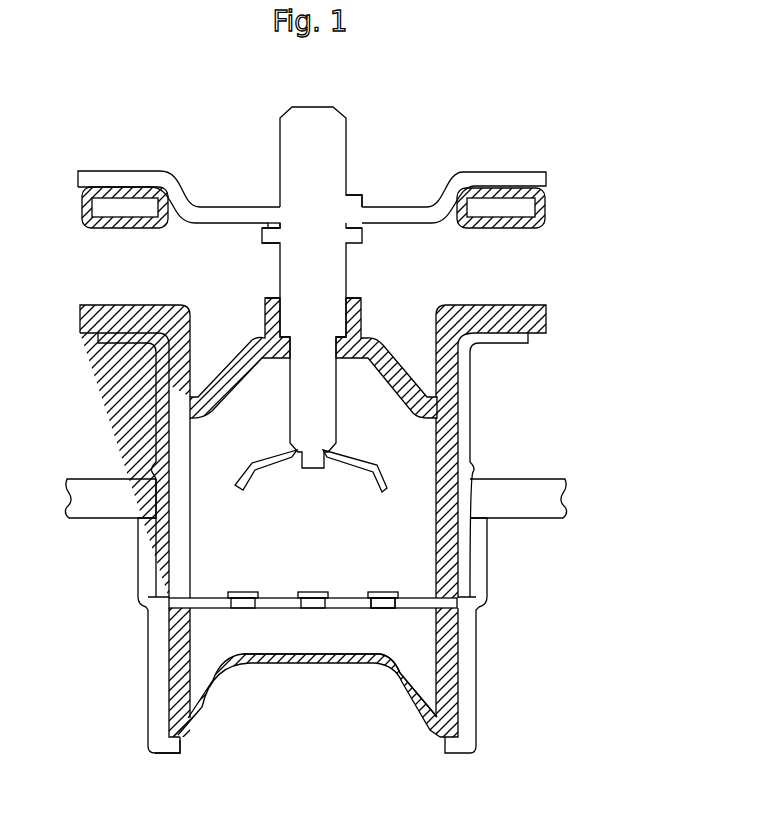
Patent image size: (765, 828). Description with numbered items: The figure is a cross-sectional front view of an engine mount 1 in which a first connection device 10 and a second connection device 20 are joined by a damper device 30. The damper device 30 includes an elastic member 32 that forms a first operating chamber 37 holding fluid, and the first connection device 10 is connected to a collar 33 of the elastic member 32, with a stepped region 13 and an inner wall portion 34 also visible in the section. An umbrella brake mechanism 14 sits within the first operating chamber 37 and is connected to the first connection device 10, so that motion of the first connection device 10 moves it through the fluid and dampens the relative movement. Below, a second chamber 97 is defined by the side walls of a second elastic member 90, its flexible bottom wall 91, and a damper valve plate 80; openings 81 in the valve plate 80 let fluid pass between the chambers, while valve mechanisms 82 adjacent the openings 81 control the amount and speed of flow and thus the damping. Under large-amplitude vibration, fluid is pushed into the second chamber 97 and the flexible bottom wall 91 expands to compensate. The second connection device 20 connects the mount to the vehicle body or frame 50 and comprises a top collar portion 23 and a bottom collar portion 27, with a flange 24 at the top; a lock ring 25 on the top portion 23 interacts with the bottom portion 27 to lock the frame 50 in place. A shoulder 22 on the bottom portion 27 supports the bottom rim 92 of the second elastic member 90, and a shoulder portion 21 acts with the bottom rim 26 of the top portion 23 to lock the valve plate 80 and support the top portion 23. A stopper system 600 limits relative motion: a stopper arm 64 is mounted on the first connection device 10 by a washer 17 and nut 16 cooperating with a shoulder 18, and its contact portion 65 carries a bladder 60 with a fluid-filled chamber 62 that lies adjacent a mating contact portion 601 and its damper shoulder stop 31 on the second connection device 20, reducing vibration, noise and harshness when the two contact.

The engine mount 1 is at (108, 108).
The first connection device 10 is at (321, 299).
The stem shoulder 13 is at (343, 335).
The umbrella brake mechanism 14 is at (385, 473).
The nut 16 is at (267, 235).
The washer 17 is at (271, 221).
The shoulder 18 is at (357, 190).
The second connection device 20 is at (297, 543).
The shoulder portion 21 is at (142, 608).
The shoulder 22 is at (172, 750).
The top collar portion 23 is at (158, 387).
The housing flange 24 is at (117, 343).
The lock ring 25 is at (153, 473).
The bottom rim 26 is at (160, 578).
The bottom collar portion 27 is at (470, 702).
The damper device 30 is at (374, 507).
The damper shoulder stop 31 is at (505, 305).
The elastic member 32 is at (383, 345).
The collar 33 is at (353, 310).
The inner body wall 34 is at (438, 577).
The first operating chamber 37 is at (378, 527).
The vehicle body or frame 50 is at (548, 477).
The bladder 60 is at (525, 210).
The chamber 62 is at (523, 210).
The stopper arm 64 is at (392, 212).
The contact portion 65 is at (505, 173).
The damper valve plate 80 is at (313, 599).
The openings 81 is at (378, 608).
The valve mechanisms 82 is at (243, 592).
The second elastic member 90 is at (173, 677).
The flexible bottom wall 91 is at (388, 667).
The bottom rim 92 is at (170, 720).
The second chamber 97 is at (302, 637).
The stopper system 600 is at (346, 210).
The mating contact portion 601 is at (512, 343).